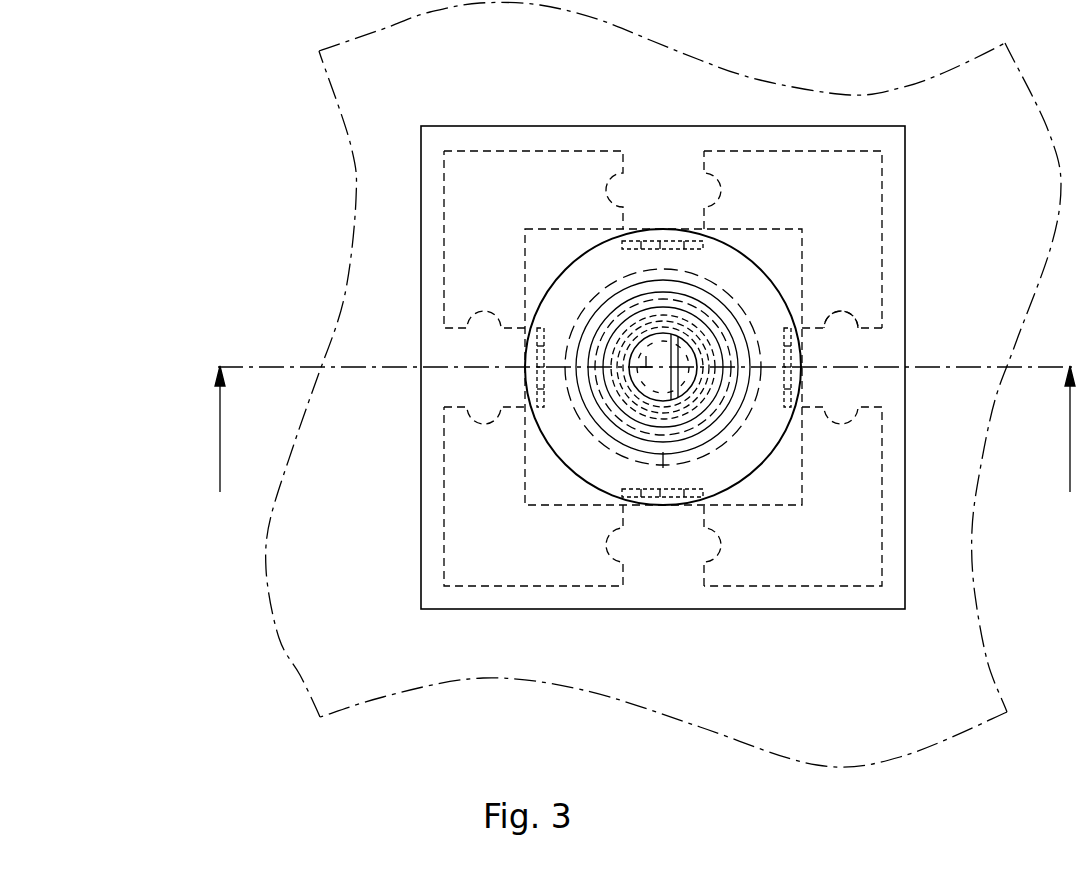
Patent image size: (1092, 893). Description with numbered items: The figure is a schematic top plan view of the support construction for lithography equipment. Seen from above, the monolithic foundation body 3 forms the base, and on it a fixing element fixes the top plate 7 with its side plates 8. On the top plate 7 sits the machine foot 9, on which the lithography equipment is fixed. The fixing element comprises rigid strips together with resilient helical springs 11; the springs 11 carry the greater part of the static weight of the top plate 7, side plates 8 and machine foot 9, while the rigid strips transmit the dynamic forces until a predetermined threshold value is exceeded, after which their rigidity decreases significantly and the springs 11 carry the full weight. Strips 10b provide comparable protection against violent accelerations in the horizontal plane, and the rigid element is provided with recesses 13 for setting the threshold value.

The monolithic foundation body 3 is at (1000, 203).
The top plate 7 is at (847, 543).
The side plates 8 is at (891, 240).
The machine foot 9 is at (733, 273).
The strips 10b is at (868, 343).
The helical springs 11 is at (603, 306).
The recesses 13 is at (903, 299).